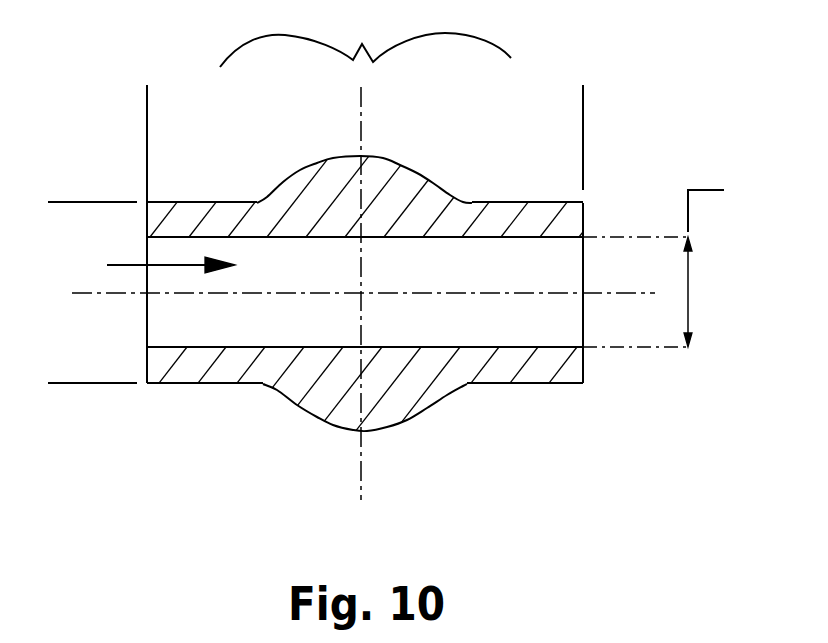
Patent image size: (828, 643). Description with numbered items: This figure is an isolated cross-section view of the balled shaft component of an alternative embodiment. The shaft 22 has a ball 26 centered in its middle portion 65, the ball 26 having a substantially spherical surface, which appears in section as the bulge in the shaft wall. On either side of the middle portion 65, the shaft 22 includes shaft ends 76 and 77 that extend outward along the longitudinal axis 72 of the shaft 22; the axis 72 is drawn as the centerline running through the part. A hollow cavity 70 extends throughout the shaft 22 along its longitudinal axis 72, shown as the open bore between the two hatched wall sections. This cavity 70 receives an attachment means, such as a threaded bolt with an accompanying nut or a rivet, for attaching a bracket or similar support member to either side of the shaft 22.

The middle portion 65 is at (365, 37).
The ball 26 is at (402, 138).
The shaft end 76 is at (222, 219).
The shaft end 77 is at (528, 219).
The hollow cavity 70 is at (149, 265).
The longitudinal axis 72 is at (117, 298).
The shaft 22 is at (268, 416).